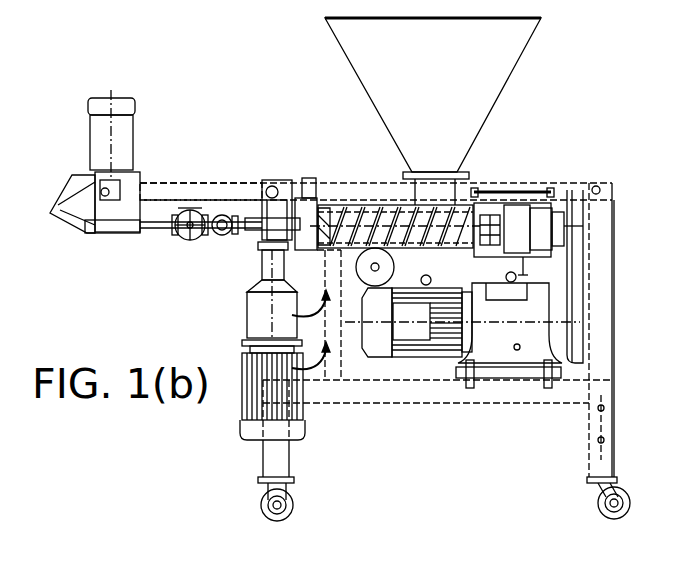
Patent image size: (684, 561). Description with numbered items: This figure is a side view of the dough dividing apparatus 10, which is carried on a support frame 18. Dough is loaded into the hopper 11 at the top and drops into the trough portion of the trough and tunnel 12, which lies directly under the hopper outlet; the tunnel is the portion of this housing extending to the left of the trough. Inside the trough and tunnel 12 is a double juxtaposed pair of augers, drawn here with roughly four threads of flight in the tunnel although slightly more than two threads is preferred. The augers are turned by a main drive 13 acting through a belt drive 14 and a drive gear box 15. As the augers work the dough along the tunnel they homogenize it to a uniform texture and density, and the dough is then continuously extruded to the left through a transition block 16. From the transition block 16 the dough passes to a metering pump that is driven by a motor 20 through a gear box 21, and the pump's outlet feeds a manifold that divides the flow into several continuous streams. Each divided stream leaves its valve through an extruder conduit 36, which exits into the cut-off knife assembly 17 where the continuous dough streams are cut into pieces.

The dough dividing apparatus 10 is at (551, 174).
The hopper 11 is at (375, 80).
The trough and tunnel 12 is at (411, 244).
The main drive 13 is at (525, 314).
The belt drive 14 is at (586, 300).
The drive gear box 15 is at (526, 205).
The transition block 16 is at (302, 200).
The cut-off knife assembly 17 is at (138, 112).
The support frame 18 is at (182, 183).
The motor 20 is at (242, 404).
The gear box 21 is at (247, 313).
The extruder conduit 36 is at (155, 232).